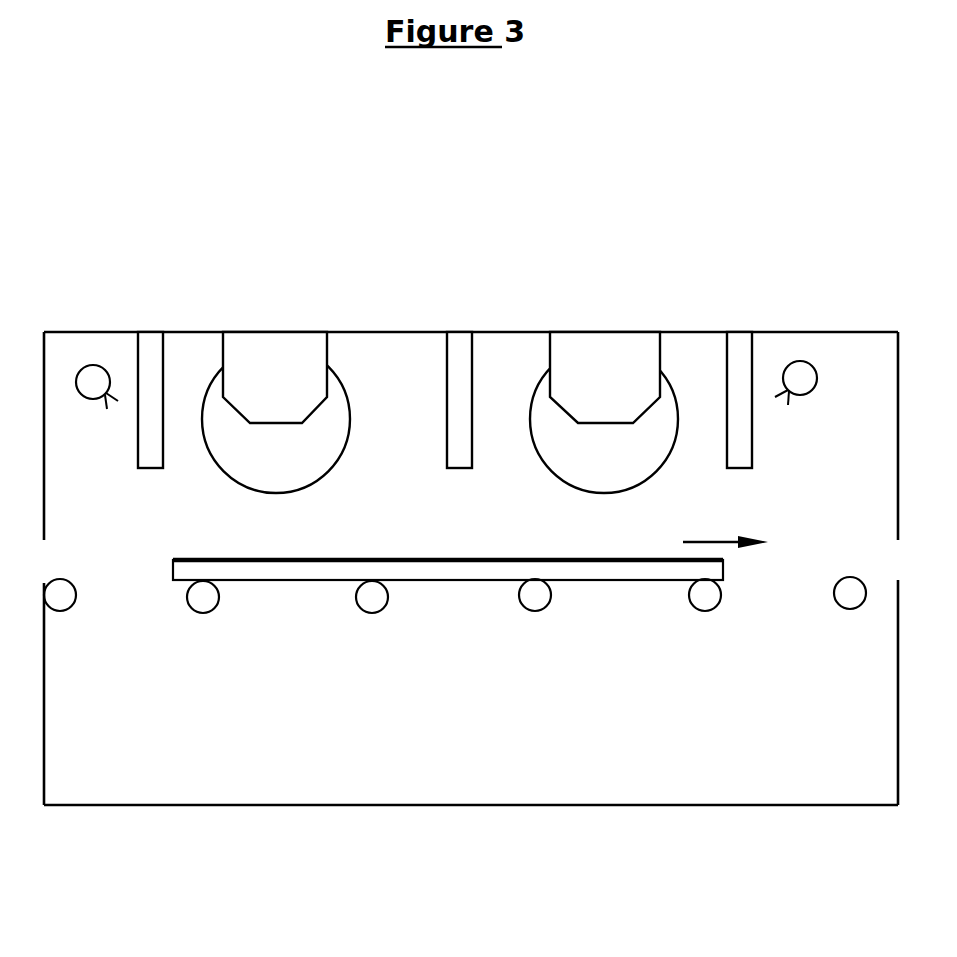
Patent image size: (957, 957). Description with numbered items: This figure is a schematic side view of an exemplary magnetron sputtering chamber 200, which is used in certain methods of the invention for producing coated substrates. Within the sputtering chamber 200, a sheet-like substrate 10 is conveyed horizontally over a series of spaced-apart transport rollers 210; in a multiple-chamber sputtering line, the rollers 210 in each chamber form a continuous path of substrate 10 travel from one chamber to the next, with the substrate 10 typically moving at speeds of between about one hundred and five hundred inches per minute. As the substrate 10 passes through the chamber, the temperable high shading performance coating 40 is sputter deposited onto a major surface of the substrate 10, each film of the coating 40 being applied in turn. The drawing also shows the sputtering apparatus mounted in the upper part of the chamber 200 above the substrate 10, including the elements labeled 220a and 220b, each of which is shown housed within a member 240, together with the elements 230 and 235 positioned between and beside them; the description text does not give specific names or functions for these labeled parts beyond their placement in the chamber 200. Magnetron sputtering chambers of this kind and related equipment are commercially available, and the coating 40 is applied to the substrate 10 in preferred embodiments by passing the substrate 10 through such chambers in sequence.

The magnetron sputtering chamber 200 is at (851, 328).
The transport rollers 210 is at (72, 607).
The first heater lamp 220a is at (217, 380).
The second heater lamp 220b is at (547, 385).
The baffles 230 is at (137, 352).
The temperature sensors 235 is at (108, 363).
The reflectors 240 is at (291, 370).
The substrate 10 is at (432, 572).
The coating 40 is at (580, 558).